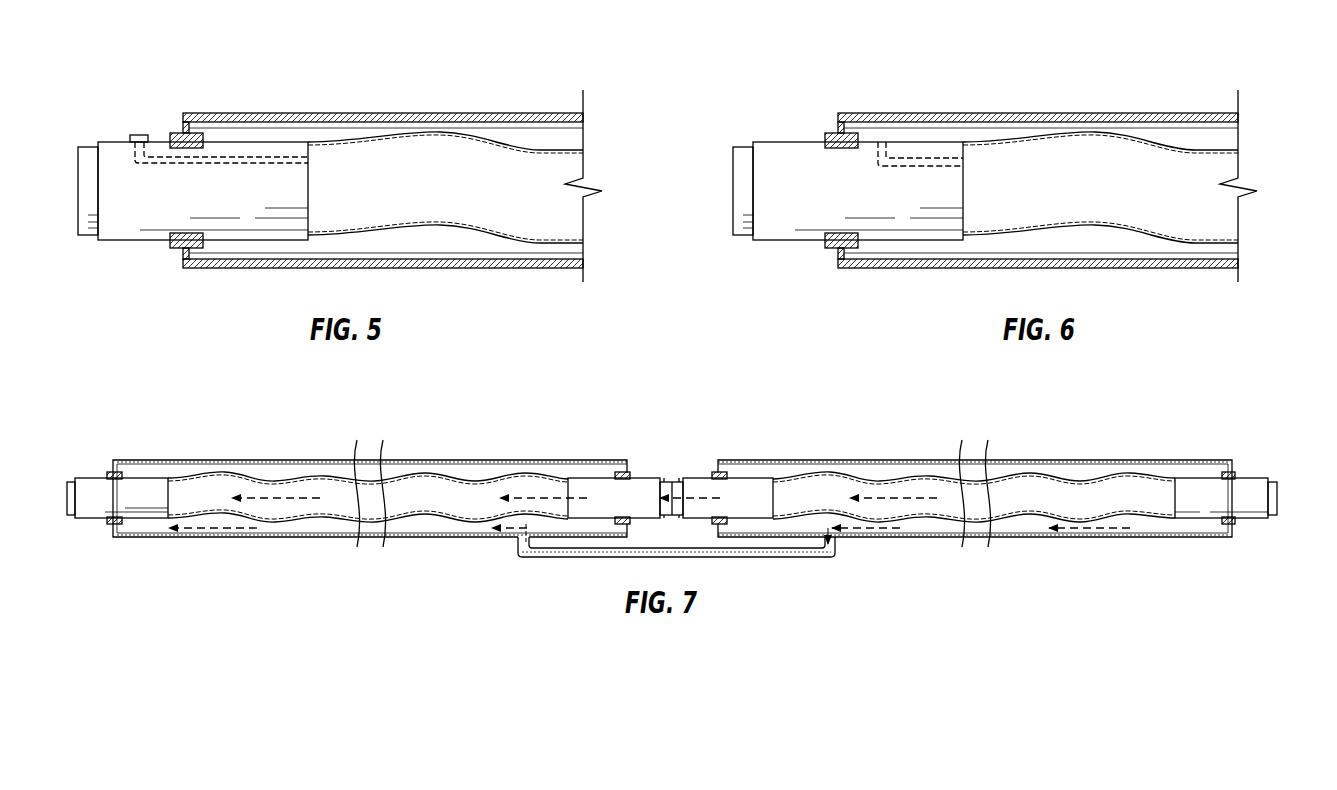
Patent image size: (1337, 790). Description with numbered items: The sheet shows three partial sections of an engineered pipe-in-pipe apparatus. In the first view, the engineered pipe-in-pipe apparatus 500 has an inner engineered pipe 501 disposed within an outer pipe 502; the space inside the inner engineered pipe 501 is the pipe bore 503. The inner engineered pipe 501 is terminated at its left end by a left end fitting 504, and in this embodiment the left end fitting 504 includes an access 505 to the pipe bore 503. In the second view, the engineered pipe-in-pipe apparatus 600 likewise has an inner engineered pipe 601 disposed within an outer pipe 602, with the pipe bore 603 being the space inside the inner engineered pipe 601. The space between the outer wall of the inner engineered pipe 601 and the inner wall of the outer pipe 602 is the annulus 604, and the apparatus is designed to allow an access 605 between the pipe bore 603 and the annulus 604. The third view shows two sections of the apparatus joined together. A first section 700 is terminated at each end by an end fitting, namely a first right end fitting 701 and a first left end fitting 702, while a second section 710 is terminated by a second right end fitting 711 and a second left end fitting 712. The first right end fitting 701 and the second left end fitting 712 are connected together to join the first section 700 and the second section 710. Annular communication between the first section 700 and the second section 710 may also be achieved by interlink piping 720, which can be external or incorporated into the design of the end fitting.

In FIG. 5, the engineered pipe-in-pipe apparatus 500 is at (157, 61).
In FIG. 5, the inner engineered pipe 501 is at (472, 138).
In FIG. 5, the outer pipe 502 is at (405, 113).
In FIG. 5, the pipe bore 503 is at (482, 203).
In FIG. 5, the left end fitting 504 is at (128, 242).
In FIG. 5, the access 505 is at (133, 135).
In FIG. 6, the engineered pipe-in-pipe apparatus 600 is at (851, 61).
In FIG. 6, the inner engineered pipe 601 is at (1092, 228).
In FIG. 6, the outer pipe 602 is at (1058, 113).
In FIG. 6, the pipe bore 603 is at (1137, 203).
In FIG. 6, the annulus 604 is at (1190, 135).
In FIG. 6, the access 605 is at (929, 158).
In FIG. 7, the first section 700 is at (281, 437).
In FIG. 7, the first right end fitting 701 is at (645, 477).
In FIG. 7, the first left end fitting 702 is at (90, 478).
In FIG. 7, the second section 710 is at (1053, 446).
In FIG. 7, the second right end fitting 711 is at (1250, 478).
In FIG. 7, the second left end fitting 712 is at (698, 477).
In FIG. 7, the interlink piping 720 is at (600, 560).